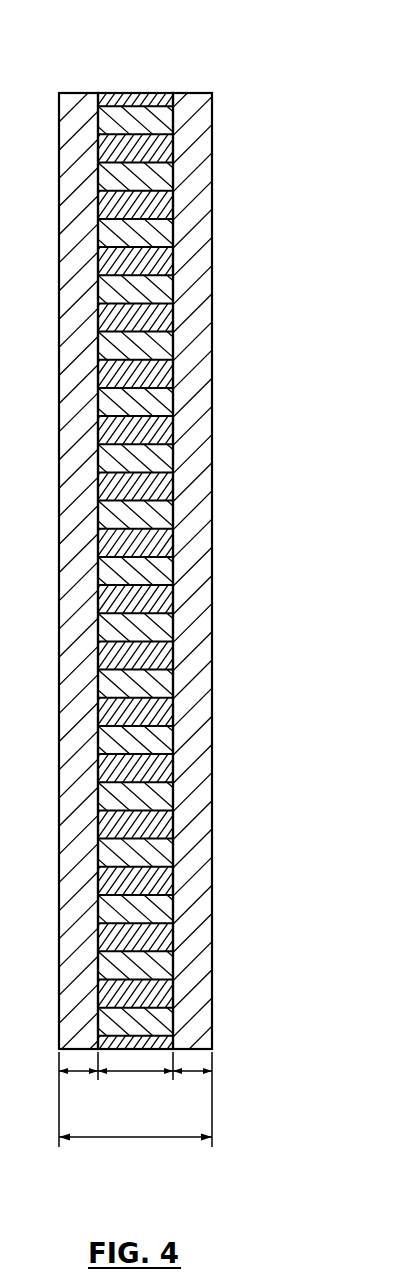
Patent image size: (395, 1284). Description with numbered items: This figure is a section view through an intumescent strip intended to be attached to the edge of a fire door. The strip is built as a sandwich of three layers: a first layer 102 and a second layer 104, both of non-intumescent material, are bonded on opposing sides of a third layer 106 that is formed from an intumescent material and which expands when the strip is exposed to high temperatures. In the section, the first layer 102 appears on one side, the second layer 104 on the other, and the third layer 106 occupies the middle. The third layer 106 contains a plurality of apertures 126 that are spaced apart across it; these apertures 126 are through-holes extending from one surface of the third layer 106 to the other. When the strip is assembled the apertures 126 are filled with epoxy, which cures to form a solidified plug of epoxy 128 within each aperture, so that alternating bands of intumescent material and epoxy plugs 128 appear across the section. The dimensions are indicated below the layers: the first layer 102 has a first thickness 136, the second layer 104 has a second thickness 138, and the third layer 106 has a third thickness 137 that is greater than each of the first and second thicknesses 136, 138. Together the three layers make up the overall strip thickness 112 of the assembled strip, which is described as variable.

The first layer 102 is at (73, 100).
The second layer 104 is at (190, 100).
The third layer 106 is at (188, 532).
The strip thickness 112 is at (130, 1137).
The apertures 126 is at (150, 189).
The plug of epoxy 128 is at (155, 210).
The first thickness 136 is at (81, 1097).
The third thickness 137 is at (135, 1097).
The second thickness 138 is at (188, 1097).